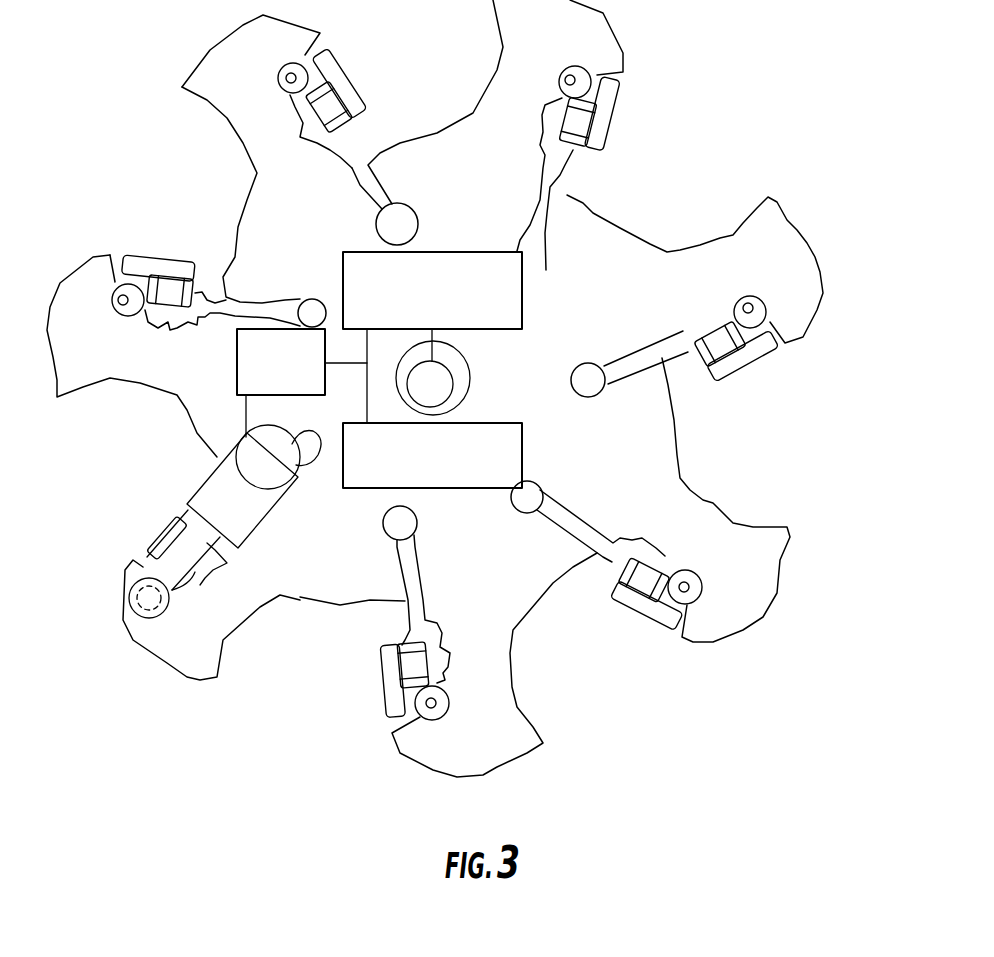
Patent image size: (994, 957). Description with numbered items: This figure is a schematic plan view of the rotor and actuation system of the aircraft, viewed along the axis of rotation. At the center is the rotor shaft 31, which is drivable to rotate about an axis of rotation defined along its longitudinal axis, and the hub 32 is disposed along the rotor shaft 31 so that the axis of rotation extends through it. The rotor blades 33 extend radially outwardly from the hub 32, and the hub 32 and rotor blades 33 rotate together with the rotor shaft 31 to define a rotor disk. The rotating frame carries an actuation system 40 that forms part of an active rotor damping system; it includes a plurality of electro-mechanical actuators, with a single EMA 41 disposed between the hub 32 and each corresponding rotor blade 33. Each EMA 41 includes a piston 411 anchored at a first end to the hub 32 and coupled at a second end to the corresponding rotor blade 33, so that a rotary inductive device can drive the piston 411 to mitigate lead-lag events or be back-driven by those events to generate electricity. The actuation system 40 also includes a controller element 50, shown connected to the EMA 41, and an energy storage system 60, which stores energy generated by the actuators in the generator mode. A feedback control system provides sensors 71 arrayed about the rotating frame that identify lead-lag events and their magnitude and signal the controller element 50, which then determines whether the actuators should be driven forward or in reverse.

The rotor shaft 31 is at (434, 383).
The hub 32 is at (468, 402).
The rotor blades 33 is at (720, 557).
The actuation system 40 is at (197, 537).
The electro-mechanical actuator 41 is at (238, 513).
The piston 411 is at (210, 533).
The controller element 50 is at (293, 377).
The energy storage system 60 is at (443, 306).
The sensors 71 is at (143, 593).